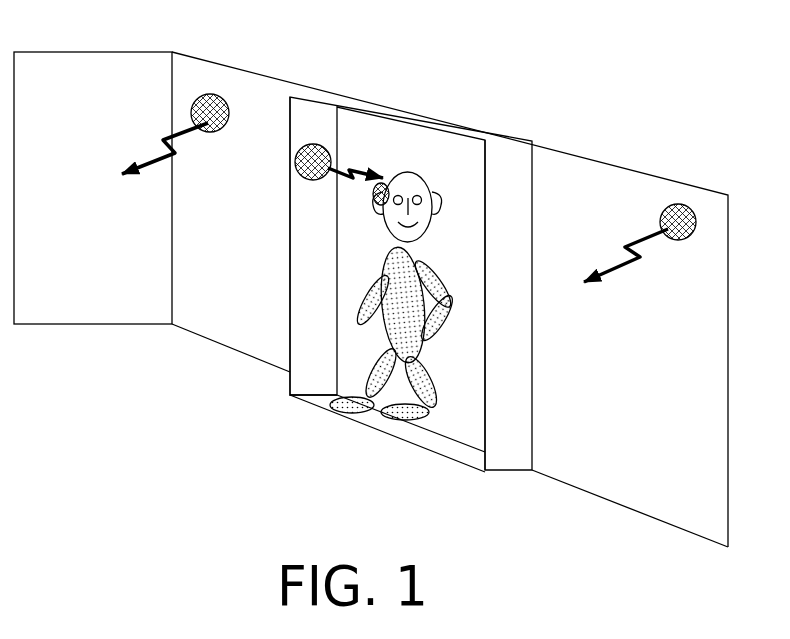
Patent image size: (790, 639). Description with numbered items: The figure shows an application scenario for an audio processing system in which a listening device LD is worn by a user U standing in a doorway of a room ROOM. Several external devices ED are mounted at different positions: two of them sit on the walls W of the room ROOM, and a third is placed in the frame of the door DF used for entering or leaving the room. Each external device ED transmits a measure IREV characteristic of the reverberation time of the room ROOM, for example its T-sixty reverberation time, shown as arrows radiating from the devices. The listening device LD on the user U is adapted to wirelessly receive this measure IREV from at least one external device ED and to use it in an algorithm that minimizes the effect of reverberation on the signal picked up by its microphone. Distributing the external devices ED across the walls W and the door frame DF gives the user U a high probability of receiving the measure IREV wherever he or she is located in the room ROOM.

The wall W is at (60, 77).
The external device ED is at (208, 100).
The measure characteristic of the reverberation time IREV is at (352, 153).
The listening device LD is at (388, 182).
The user U is at (412, 182).
The door frame DF is at (318, 338).
The room ROOM is at (115, 409).